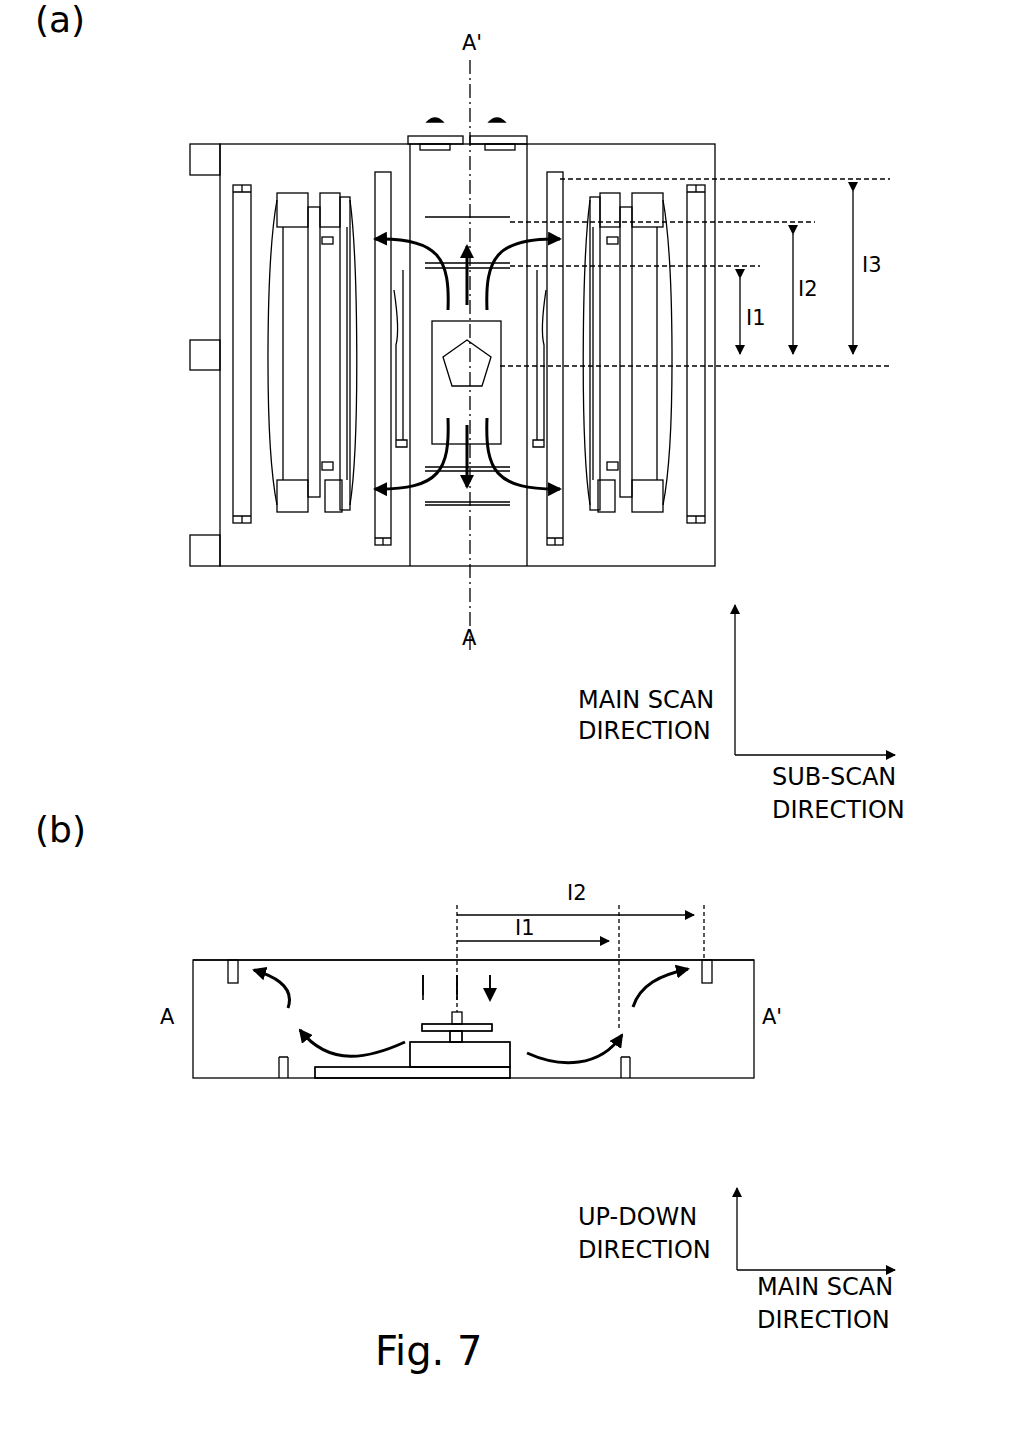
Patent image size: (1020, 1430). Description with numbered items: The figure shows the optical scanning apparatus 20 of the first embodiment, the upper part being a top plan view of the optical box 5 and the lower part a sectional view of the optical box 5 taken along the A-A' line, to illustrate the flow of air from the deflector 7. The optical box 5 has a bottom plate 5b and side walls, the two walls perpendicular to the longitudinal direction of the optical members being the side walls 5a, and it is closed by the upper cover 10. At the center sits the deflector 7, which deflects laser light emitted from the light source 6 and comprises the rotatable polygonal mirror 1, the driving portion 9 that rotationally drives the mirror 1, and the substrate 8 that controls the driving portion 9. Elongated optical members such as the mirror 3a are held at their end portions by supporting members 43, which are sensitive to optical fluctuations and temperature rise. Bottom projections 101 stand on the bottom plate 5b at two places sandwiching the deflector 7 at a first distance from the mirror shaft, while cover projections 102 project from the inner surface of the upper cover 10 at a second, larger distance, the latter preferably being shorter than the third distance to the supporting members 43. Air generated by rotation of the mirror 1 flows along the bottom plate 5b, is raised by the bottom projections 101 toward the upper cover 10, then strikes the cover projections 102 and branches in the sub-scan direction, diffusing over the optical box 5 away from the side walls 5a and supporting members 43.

The rotatable polygonal mirror 1 is at (440, 1035).
The mirror 3a is at (555, 472).
The optical box 5 is at (730, 1080).
The side walls 5a is at (608, 144).
The bottom plate 5b is at (490, 540).
The light source 6 is at (445, 137).
The deflector 7 is at (418, 405).
The substrate 8 is at (375, 1075).
The driving portion 9 is at (490, 1050).
The upper cover 10 is at (332, 958).
The optical scanning apparatus 20 is at (606, 112).
The supporting members 43 is at (383, 175).
The bottom projections 101 is at (430, 263).
The cover projections 102 is at (503, 217).